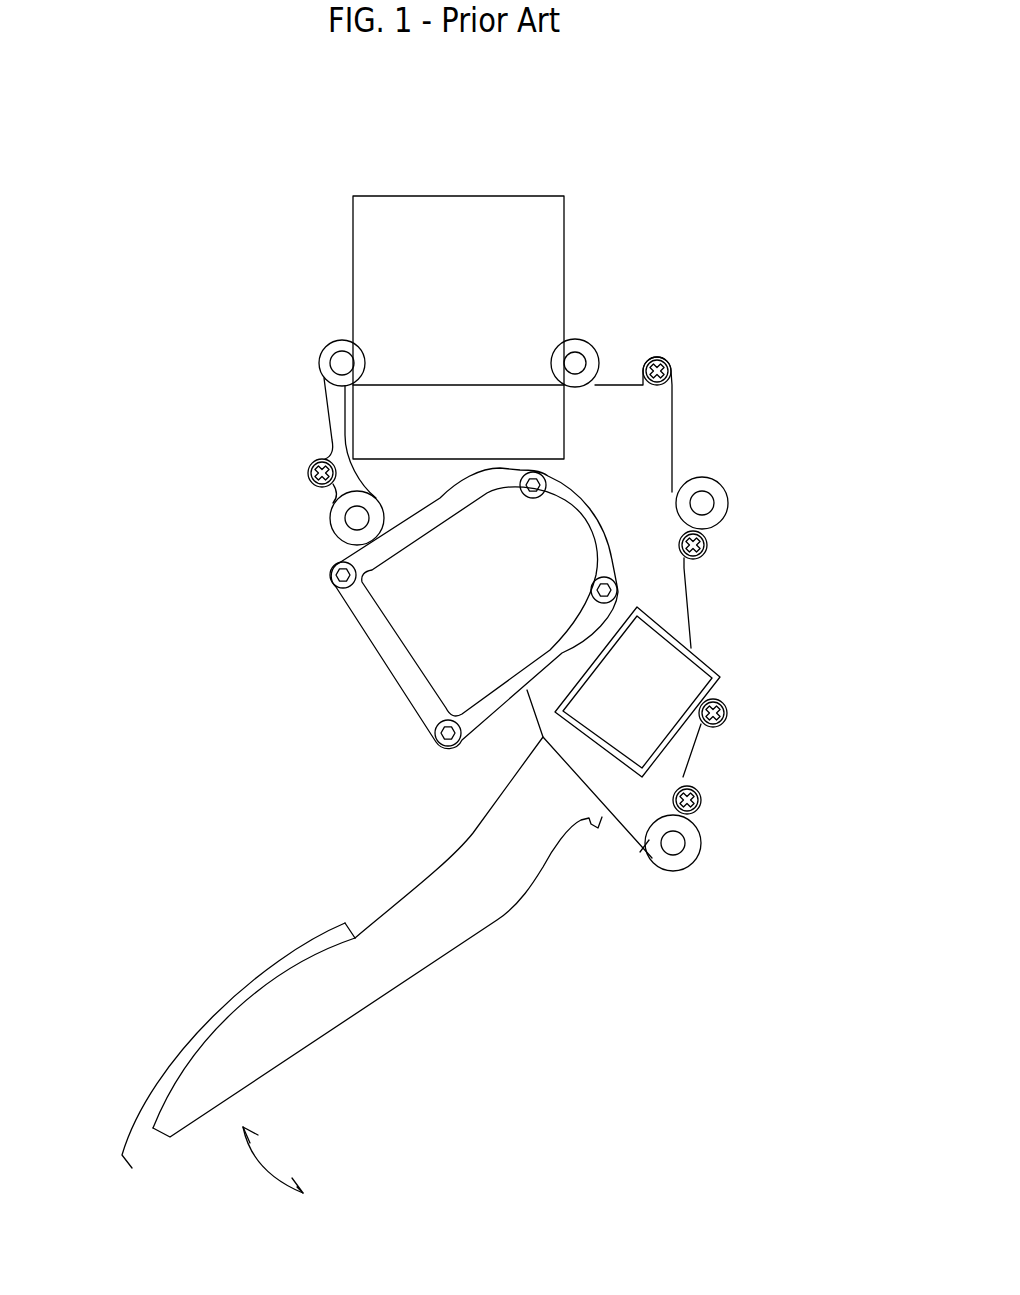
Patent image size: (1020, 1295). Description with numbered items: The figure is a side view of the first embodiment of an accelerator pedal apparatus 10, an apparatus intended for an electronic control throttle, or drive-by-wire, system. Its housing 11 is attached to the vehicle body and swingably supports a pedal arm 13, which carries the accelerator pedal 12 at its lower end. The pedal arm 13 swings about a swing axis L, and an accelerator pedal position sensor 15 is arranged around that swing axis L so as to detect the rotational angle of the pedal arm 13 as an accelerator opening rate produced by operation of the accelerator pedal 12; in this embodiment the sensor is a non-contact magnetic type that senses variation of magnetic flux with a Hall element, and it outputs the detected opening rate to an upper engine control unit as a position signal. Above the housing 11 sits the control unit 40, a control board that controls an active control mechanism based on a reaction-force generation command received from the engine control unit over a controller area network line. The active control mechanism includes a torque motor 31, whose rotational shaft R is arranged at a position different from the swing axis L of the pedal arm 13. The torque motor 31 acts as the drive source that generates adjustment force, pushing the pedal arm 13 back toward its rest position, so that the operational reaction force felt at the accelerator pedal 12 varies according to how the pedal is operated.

The accelerator pedal apparatus 10 is at (663, 313).
The housing 11 is at (640, 457).
The accelerator pedal 12 is at (187, 1050).
The pedal arm 13 is at (453, 910).
The accelerator pedal position sensor 15 is at (707, 648).
The torque motor 31 is at (468, 663).
The control unit 40 is at (475, 177).
The rotational shaft R is at (545, 552).
The swing axis L is at (632, 693).